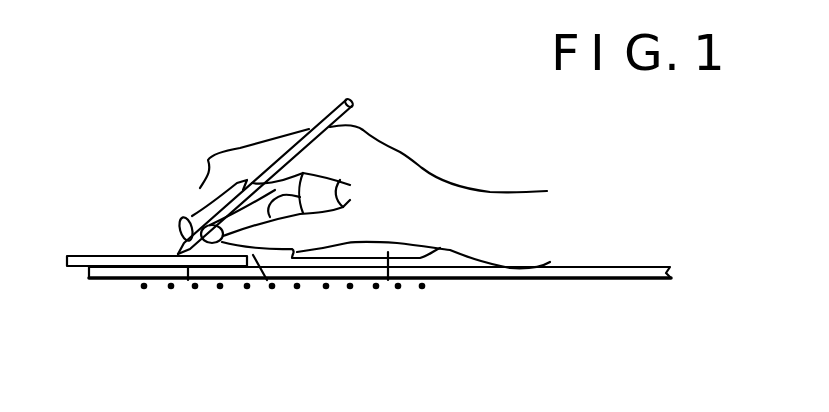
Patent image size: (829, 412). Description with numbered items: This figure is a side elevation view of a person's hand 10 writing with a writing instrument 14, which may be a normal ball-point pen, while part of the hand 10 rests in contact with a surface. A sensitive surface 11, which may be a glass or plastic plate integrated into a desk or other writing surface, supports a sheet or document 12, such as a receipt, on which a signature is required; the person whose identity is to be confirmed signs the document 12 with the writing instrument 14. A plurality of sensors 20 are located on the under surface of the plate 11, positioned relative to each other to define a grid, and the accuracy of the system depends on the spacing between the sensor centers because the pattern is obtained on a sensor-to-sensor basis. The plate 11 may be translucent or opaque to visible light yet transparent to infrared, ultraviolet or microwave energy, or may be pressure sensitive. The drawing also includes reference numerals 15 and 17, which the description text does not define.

The hand 10 is at (422, 168).
The sensitive surface 11 is at (105, 280).
The sheet or document 12 is at (128, 256).
The writing instrument 14 is at (327, 112).
The hand rest contact 15 is at (388, 280).
The pen contact point 17 is at (267, 280).
The sensors 20 is at (325, 289).